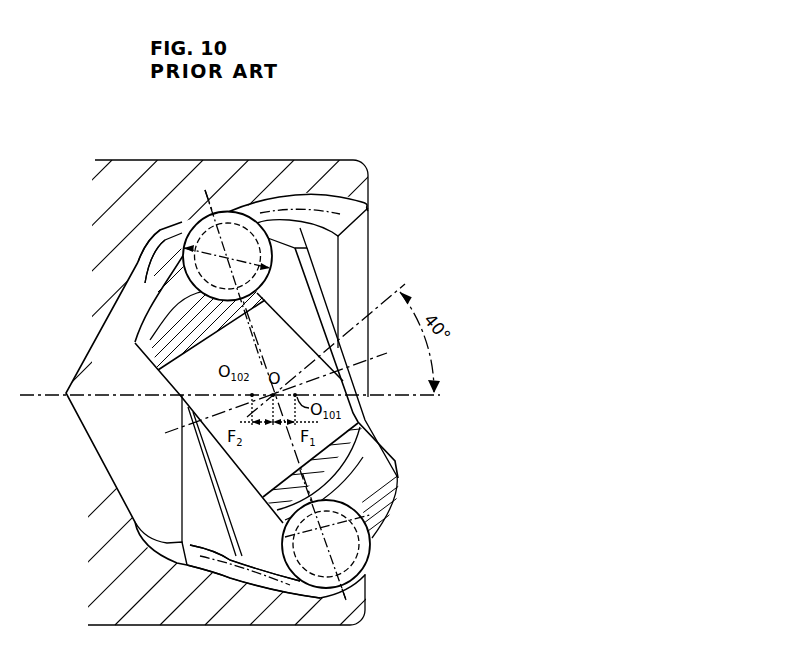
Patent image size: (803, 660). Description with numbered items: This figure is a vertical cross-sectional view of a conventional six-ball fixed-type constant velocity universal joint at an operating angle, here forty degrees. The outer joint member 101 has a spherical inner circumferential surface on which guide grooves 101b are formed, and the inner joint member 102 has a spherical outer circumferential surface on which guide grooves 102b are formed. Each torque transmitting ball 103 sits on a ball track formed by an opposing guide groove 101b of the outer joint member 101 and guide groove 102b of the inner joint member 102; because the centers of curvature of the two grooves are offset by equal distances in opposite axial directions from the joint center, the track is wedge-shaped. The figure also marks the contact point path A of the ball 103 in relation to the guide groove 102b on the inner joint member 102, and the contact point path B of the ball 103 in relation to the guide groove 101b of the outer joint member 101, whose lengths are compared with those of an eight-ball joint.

The outer joint member 101 is at (138, 160).
The guide groove 101b is at (284, 590).
The inner joint member 102 is at (396, 460).
The guide groove 102b is at (150, 343).
The torque transmitting ball 103 is at (242, 210).
The contact point path A is at (160, 308).
The contact point path B is at (233, 574).